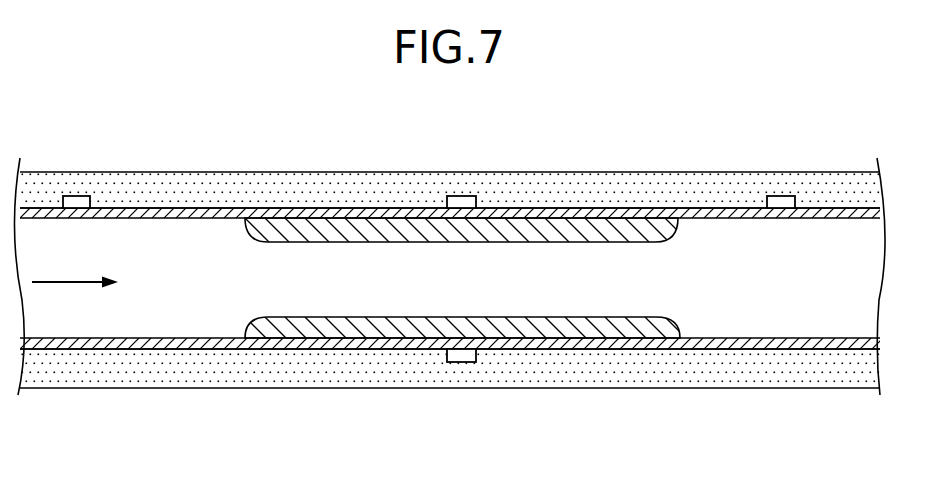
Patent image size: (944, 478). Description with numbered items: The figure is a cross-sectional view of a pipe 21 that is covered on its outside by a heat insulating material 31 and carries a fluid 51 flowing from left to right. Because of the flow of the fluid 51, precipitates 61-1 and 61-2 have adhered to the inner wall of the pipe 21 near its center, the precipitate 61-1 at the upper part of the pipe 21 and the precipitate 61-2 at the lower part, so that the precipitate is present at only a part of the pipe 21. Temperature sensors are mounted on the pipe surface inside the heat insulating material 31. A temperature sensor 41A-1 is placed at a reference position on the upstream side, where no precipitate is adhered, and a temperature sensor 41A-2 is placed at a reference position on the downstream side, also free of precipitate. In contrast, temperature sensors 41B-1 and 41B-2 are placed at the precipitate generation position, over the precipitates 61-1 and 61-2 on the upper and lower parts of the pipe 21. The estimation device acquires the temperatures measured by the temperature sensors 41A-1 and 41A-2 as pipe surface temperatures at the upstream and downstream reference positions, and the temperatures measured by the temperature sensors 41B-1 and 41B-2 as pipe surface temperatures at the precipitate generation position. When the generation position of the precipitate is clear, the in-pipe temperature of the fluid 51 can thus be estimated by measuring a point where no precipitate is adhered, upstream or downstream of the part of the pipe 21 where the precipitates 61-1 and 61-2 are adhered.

The pipe 21 is at (210, 340).
The heat insulating material 31 is at (858, 193).
The temperature sensor 41A-1 is at (77, 196).
The temperature sensor 41A-2 is at (780, 196).
The temperature sensor 41B-1 is at (462, 196).
The temperature sensor 41B-2 is at (460, 363).
The fluid 51 is at (73, 282).
The precipitate 61-1 is at (625, 228).
The precipitate 61-2 is at (612, 327).